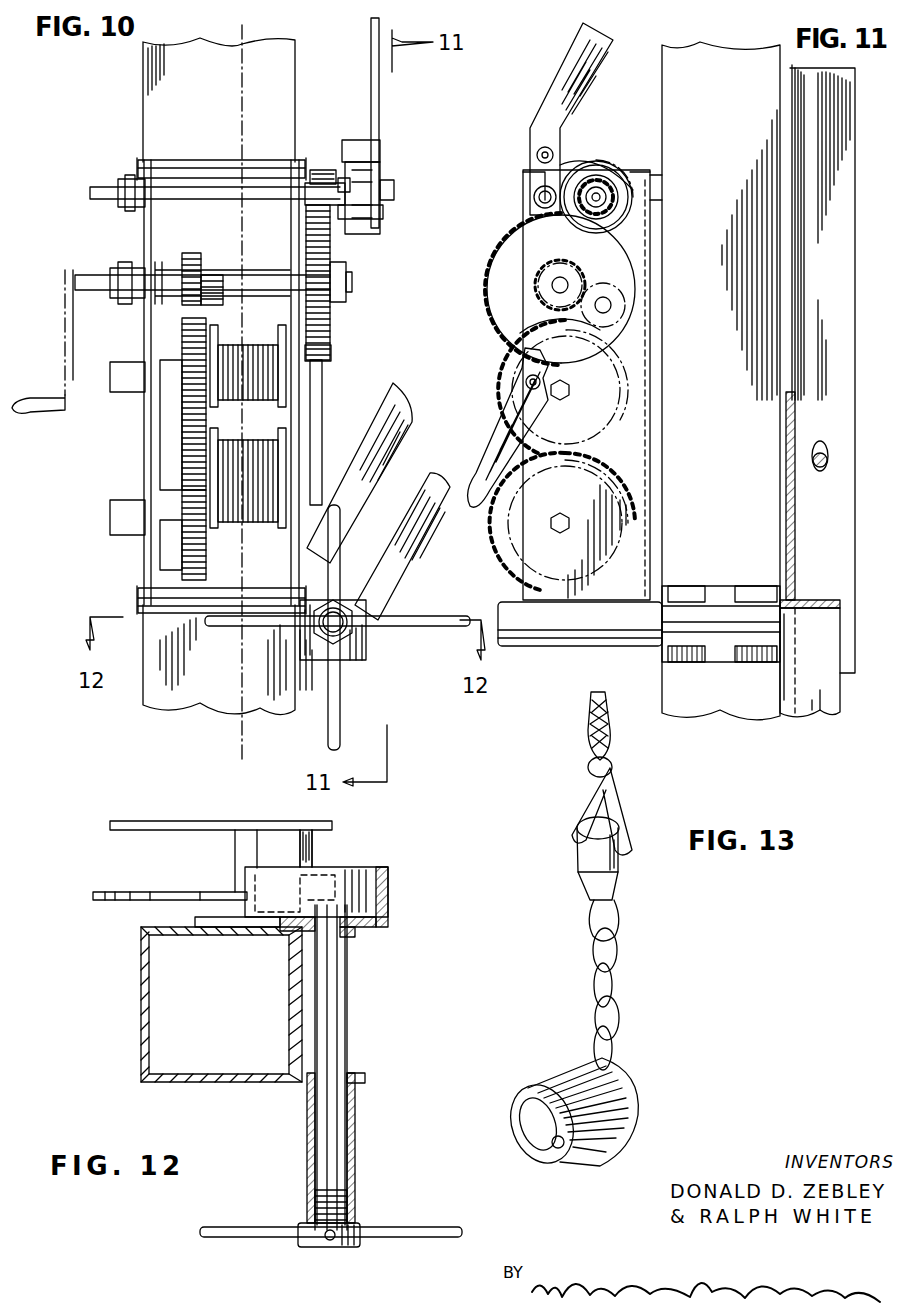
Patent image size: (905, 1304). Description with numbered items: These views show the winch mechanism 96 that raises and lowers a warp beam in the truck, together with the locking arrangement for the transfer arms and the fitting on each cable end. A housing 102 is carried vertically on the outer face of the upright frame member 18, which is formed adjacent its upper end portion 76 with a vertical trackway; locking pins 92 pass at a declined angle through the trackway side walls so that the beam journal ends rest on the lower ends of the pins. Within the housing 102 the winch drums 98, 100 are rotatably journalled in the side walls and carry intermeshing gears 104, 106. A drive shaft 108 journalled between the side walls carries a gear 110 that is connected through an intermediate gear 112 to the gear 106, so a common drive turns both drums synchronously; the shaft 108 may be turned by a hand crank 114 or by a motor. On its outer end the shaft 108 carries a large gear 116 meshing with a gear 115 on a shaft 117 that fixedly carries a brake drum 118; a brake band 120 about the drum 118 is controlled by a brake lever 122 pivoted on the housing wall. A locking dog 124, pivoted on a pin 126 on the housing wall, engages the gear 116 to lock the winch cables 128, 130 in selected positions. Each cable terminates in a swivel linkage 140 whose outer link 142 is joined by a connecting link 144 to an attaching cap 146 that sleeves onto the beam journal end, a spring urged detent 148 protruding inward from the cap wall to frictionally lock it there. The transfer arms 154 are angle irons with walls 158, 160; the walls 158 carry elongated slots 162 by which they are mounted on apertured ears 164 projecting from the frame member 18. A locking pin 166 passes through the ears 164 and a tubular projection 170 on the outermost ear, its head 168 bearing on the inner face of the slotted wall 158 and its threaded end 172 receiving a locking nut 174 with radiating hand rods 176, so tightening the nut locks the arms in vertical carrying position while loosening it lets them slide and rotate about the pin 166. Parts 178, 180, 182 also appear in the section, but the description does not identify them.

In FIG. 10, the vertical frame member 18 is at (172, 132).
In FIG. 11, the vertical frame member 18 is at (742, 106).
In FIG. 12, the vertical frame member 18 is at (248, 1080).
In FIG. 11, the upper end portion 76 is at (842, 369).
In FIG. 11, the locking pin 92 is at (830, 458).
In FIG. 10, the gear train 96 is at (360, 324).
In FIG. 11, the gear train 96 is at (494, 207).
In FIG. 10, the winch drum 98 is at (288, 425).
In FIG. 11, the winch drum 98 is at (505, 400).
In FIG. 10, the winch drum 100 is at (275, 482).
In FIG. 11, the winch drum 100 is at (512, 508).
In FIG. 10, the housing 102 is at (138, 425).
In FIG. 10, the gear 104 is at (186, 563).
In FIG. 11, the gear 104 is at (505, 570).
In FIG. 10, the gear 106 is at (182, 338).
In FIG. 11, the gear 106 is at (497, 352).
In FIG. 10, the drive shaft 108 is at (93, 277).
In FIG. 10, the gear 110 is at (192, 254).
In FIG. 11, the gear 110 is at (540, 290).
In FIG. 10, the intermediate gear 112 is at (206, 298).
In FIG. 11, the intermediate gear 112 is at (632, 288).
In FIG. 10, the hand crank 114 is at (74, 383).
In FIG. 10, the gear 115 is at (318, 168).
In FIG. 11, the gear 115 is at (600, 172).
In FIG. 10, the large gear 116 is at (333, 248).
In FIG. 11, the large gear 116 is at (628, 262).
In FIG. 10, the shaft 117 is at (262, 188).
In FIG. 11, the shaft 117 is at (602, 200).
In FIG. 10, the brake drum 118 is at (356, 172).
In FIG. 11, the brake drum 118 is at (628, 182).
In FIG. 10, the brake band 120 is at (358, 221).
In FIG. 11, the brake band 120 is at (578, 168).
In FIG. 10, the brake lever 122 is at (379, 116).
In FIG. 11, the brake lever 122 is at (562, 88).
In FIG. 10, the locking dog 124 is at (322, 410).
In FIG. 11, the locking dog 124 is at (497, 432).
In FIG. 10, the pin 126 is at (325, 372).
In FIG. 11, the pin 126 is at (527, 382).
In FIG. 10, the winch cable 128 is at (242, 720).
In FIG. 10, the winch cable 130 is at (242, 68).
In FIG. 13, the swivel linkage 140 is at (623, 925).
In FIG. 13, the outer link 142 is at (634, 990).
In FIG. 13, the connecting link 144 is at (626, 1050).
In FIG. 13, the attaching cap 146 is at (572, 1072).
In FIG. 13, the spring urged detent 148 is at (552, 1144).
In FIG. 10, the transfer arm 154 is at (420, 384).
In FIG. 12, the transfer arm 154 is at (408, 903).
In FIG. 12, the side wall 158 is at (376, 926).
In FIG. 12, the wall 160 is at (388, 880).
In FIG. 10, the elongated longitudinal slot 162 is at (372, 555).
In FIG. 12, the elongated longitudinal slot 162 is at (292, 950).
In FIG. 12, the apertured supporting ear 164 is at (352, 938).
In FIG. 11, the locking pin 166 is at (712, 600).
In FIG. 12, the locking pin 166 is at (330, 985).
In FIG. 11, the head 168 is at (800, 598).
In FIG. 12, the head 168 is at (345, 867).
In FIG. 10, the tubular projection 170 is at (337, 621).
In FIG. 11, the tubular projection 170 is at (568, 625).
In FIG. 12, the tubular projection 170 is at (355, 1148).
In FIG. 12, the threaded end 172 is at (348, 1210).
In FIG. 10, the locking nut 174 is at (315, 625).
In FIG. 12, the locking nut 174 is at (312, 1240).
In FIG. 10, the hand rod 176 is at (336, 684).
In FIG. 12, the hand rod 176 is at (380, 1237).
In FIG. 12, the top plate 178 is at (143, 825).
In FIG. 12, the lower plate end 180 is at (92, 897).
In FIG. 12, the lower plate 182 is at (130, 892).